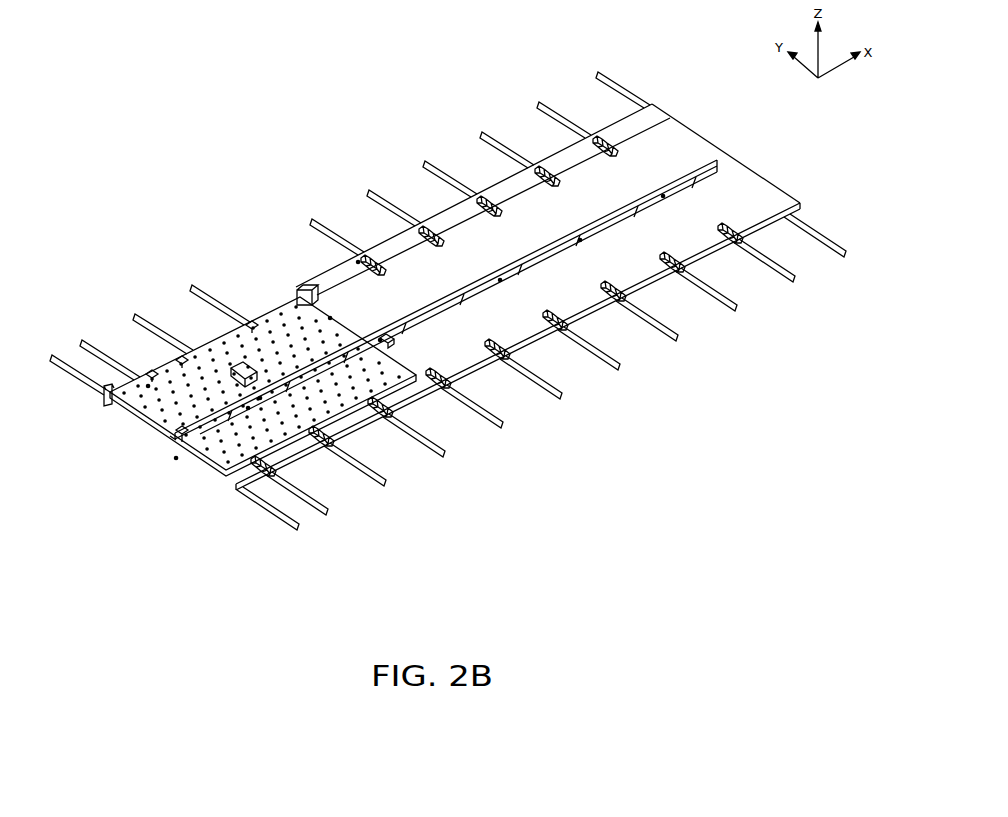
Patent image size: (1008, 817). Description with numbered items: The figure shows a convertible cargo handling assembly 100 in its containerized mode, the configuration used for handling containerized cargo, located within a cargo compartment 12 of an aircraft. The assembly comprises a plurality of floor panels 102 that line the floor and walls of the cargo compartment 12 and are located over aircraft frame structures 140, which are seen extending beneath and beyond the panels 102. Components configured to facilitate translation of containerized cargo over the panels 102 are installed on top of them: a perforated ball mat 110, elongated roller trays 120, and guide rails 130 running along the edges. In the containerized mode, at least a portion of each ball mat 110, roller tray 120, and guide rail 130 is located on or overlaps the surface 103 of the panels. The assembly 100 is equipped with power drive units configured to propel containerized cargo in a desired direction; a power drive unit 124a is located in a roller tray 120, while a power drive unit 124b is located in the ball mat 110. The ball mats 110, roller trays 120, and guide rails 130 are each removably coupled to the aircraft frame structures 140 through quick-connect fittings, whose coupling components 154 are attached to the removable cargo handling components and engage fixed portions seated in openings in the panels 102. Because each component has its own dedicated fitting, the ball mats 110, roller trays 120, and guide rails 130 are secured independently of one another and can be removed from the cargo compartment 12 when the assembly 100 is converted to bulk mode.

The cargo compartment 12 is at (190, 148).
The convertible cargo handling assembly 100 is at (355, 138).
The panels 102 is at (453, 237).
The surface 103 is at (666, 232).
The ball mats 110 is at (290, 303).
The roller trays 120 is at (437, 305).
The power drive unit 124a is at (388, 334).
The power drive unit 124b is at (238, 366).
The guide rails 130 is at (484, 200).
The aircraft frame structures 140 is at (548, 108).
The coupling component 154 is at (357, 262).